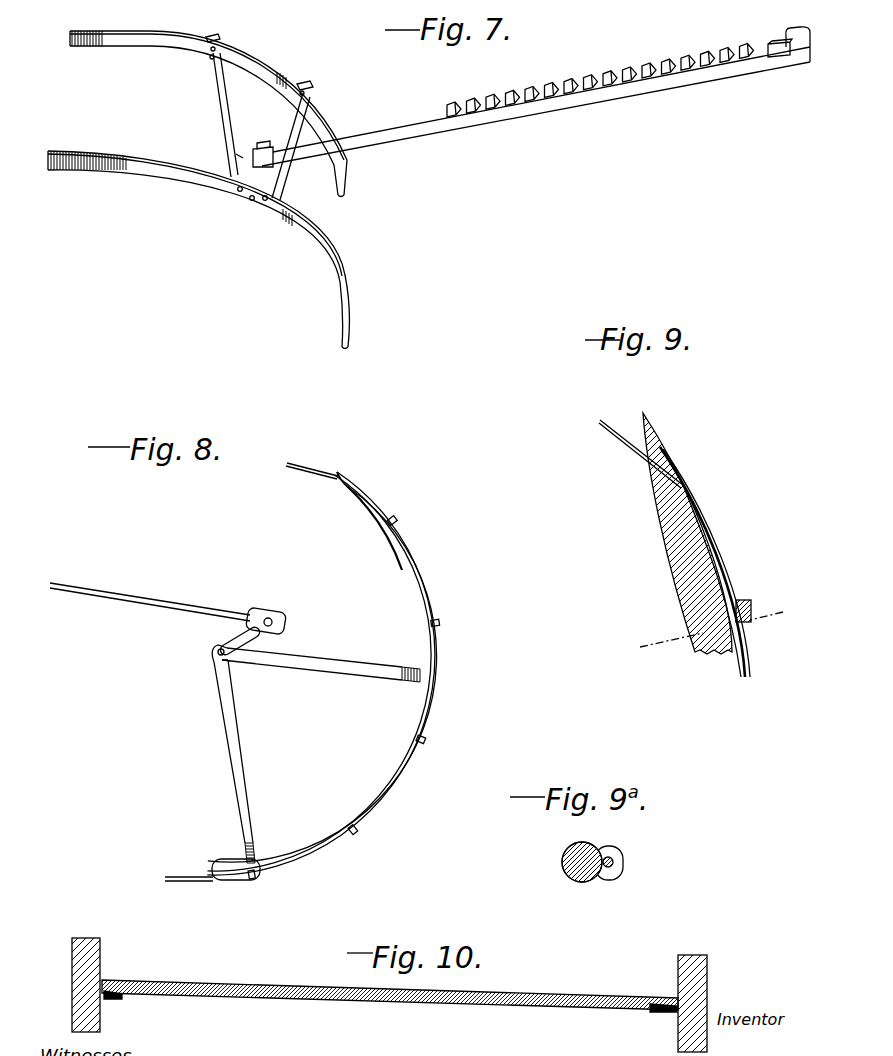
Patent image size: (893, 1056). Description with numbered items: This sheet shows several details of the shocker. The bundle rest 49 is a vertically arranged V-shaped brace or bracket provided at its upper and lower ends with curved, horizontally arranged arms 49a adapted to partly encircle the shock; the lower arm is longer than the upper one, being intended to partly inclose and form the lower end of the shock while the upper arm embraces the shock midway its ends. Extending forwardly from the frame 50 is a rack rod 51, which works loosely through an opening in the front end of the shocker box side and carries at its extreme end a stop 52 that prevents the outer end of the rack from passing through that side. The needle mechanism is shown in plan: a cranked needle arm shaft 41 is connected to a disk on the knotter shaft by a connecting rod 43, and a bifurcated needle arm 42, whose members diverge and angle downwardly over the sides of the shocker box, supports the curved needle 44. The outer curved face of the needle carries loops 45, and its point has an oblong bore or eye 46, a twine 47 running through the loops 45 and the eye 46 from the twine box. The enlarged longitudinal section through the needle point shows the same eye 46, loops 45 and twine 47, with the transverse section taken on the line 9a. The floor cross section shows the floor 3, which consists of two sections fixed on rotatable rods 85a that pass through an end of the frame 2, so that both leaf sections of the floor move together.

In FIG. 7, the curved horizontally arranged arms 49a is at (170, 21).
In FIG. 7, the frame 50 is at (235, 126).
In FIG. 7, the bundle rest 49 is at (236, 155).
In FIG. 8, the bundle rest 49 is at (415, 597).
In FIG. 9, the bundle rest 49 is at (705, 562).
In FIG. 7, the rack rod 51 is at (510, 115).
In FIG. 7, the stop 52 is at (787, 30).
In FIG. 8, the twine 47 is at (297, 470).
In FIG. 9, the twine 47 is at (627, 452).
In FIG. 9A, the twine 47 is at (615, 863).
In FIG. 8, the oblong bore or eye 46 is at (369, 521).
In FIG. 9, the oblong bore or eye 46 is at (667, 492).
In FIG. 8, the loops 45 is at (442, 625).
In FIG. 9, the loops 45 is at (752, 602).
In FIG. 9A, the loops 45 is at (618, 857).
In FIG. 9A, the curved needle 44 is at (565, 850).
In FIG. 8, the connecting rod 43 is at (188, 603).
In FIG. 8, the cranked needle arm shaft 41 is at (243, 638).
In FIG. 8, the bifurcated needle arm 42 is at (300, 668).
In FIG. 9, the section line 9a is at (704, 627).
In FIG. 10, the frame 2 is at (92, 958).
In FIG. 10, the floor 3 is at (303, 985).
In FIG. 10, the rotatable rods 85a is at (122, 997).